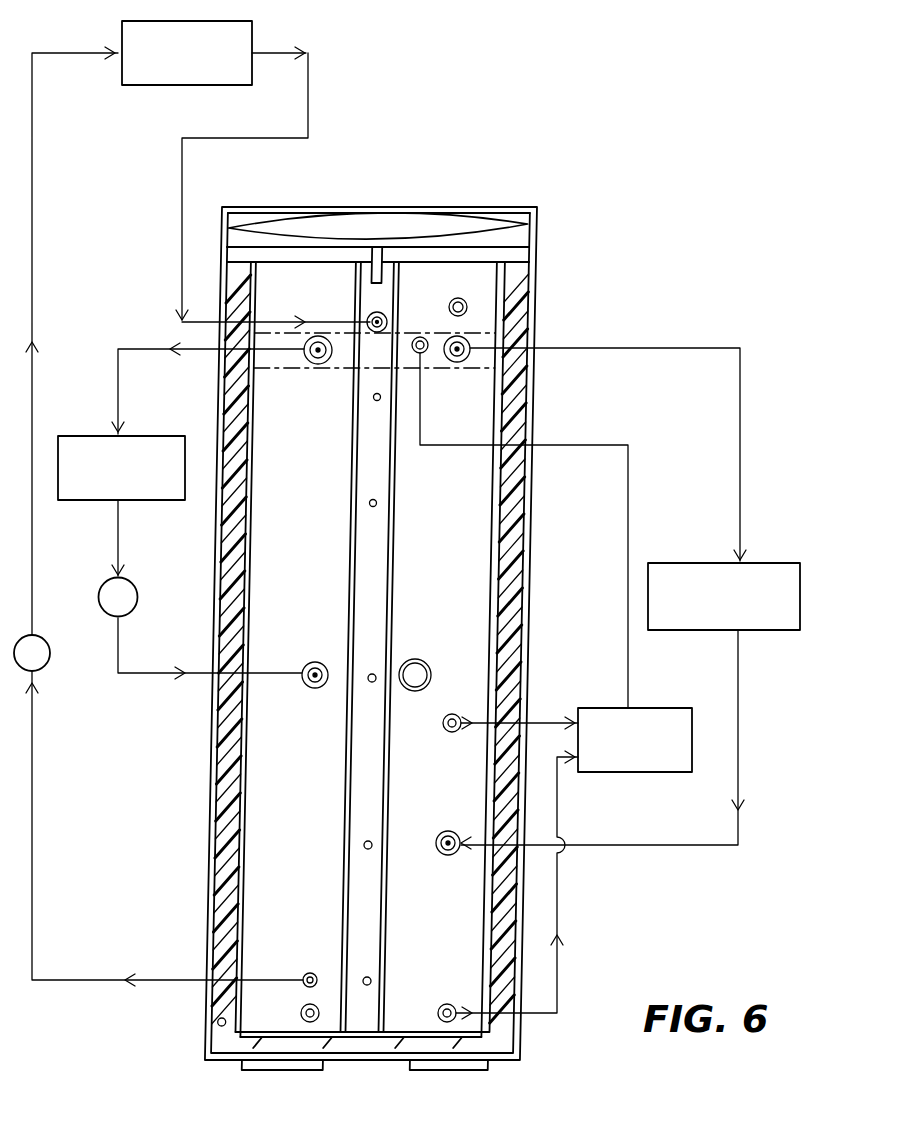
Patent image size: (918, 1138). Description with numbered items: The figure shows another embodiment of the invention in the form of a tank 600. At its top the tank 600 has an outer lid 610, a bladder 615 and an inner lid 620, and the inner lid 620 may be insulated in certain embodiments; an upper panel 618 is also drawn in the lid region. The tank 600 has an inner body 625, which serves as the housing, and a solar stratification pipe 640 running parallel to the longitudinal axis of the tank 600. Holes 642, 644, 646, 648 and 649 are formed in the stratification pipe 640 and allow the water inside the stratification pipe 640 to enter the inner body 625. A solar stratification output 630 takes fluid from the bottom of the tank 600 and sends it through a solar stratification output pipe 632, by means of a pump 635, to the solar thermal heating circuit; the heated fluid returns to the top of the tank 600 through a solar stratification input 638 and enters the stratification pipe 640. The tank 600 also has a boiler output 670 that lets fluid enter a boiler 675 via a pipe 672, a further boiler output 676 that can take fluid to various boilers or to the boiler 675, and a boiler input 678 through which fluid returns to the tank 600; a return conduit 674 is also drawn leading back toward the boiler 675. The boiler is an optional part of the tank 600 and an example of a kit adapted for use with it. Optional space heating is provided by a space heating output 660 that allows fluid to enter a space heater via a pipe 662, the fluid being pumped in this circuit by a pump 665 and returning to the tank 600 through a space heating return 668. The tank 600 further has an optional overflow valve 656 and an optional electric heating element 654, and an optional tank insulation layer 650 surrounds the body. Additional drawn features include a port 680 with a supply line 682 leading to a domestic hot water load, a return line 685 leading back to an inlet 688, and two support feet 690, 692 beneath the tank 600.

The tank 600 is at (553, 167).
The outer lid 610 is at (534, 233).
The bladder 615 is at (347, 222).
The top insulation panel 618 is at (237, 220).
The inner lid 620 is at (518, 255).
The inner body 625 is at (272, 788).
The solar stratification output 630 is at (313, 973).
The solar stratification output pipe 632 is at (33, 857).
The pump 635 is at (50, 657).
The solar stratification input 638 is at (375, 313).
The solar stratification pipe 640 is at (375, 465).
The hole 642 is at (375, 402).
The hole 644 is at (378, 503).
The hole 646 is at (375, 683).
The hole 648 is at (369, 849).
The hole 649 is at (372, 980).
The tank insulation layer 650 is at (515, 562).
The electric heating element 654 is at (415, 660).
The overflow valve 656 is at (458, 297).
The space heating output 660 is at (318, 365).
The pipe 662 is at (116, 392).
The pump 665 is at (137, 597).
The space heating return 668 is at (309, 665).
The boiler output 670 is at (452, 712).
The pipe 672 is at (545, 722).
The boiler return conduit 674 is at (447, 1014).
The boiler 675 is at (645, 708).
The boiler output 676 is at (305, 1014).
The boiler input 678 is at (422, 353).
The domestic hot water supply port 680 is at (470, 349).
The domestic hot water supply conduit 682 is at (693, 348).
The domestic hot water return conduit 685 is at (800, 632).
The return inlet port 688 is at (450, 830).
The support foot 690 is at (275, 1064).
The support foot 692 is at (453, 1065).